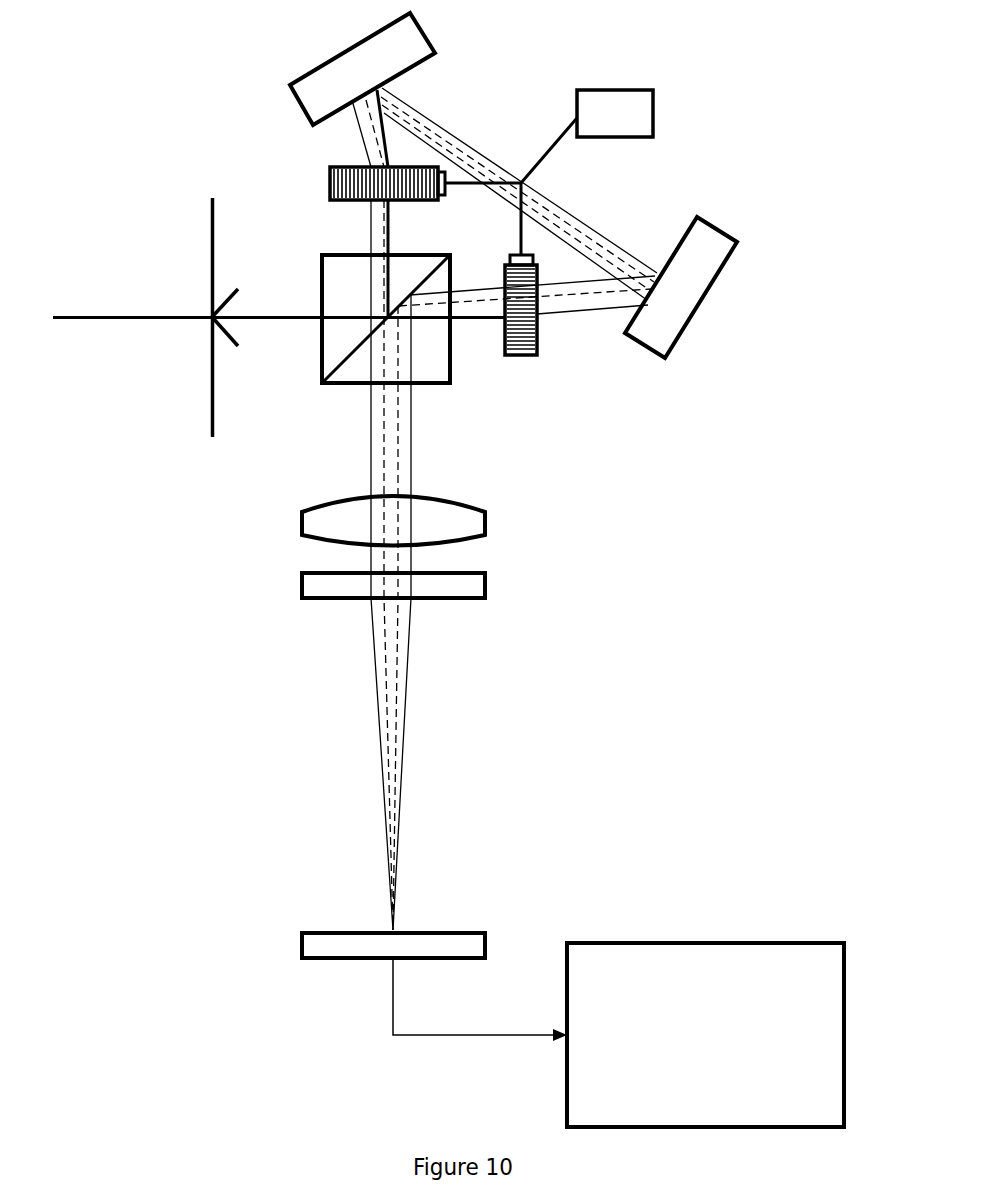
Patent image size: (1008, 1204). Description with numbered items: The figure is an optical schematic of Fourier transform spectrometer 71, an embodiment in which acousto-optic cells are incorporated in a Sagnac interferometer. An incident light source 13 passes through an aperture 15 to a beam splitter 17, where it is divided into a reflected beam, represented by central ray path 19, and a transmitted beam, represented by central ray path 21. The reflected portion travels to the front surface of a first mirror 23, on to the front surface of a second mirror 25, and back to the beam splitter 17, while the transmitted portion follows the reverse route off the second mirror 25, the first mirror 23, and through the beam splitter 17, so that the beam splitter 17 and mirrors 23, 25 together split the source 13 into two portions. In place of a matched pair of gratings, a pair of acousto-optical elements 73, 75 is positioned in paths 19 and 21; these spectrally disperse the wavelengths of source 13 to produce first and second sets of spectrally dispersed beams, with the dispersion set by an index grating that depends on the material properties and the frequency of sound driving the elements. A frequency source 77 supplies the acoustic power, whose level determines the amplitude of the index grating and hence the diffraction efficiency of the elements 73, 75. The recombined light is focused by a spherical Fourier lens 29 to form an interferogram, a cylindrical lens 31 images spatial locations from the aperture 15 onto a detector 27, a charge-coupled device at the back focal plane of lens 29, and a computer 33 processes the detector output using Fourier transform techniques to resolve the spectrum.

The incident light source 13 is at (168, 316).
The aperture 15 is at (213, 227).
The beam splitter 17 is at (322, 379).
The central ray path of reflected beam 19 is at (393, 242).
The central ray path of transmitted beam 21 is at (470, 319).
The first mirror 23 is at (313, 70).
The second mirror 25 is at (700, 302).
The detector 27 is at (302, 946).
The spherical lens 29 is at (302, 520).
The cylindrical lens 31 is at (302, 585).
The computer 33 is at (705, 942).
The Fourier transform spectrometer 71 is at (690, 489).
The acousto-optical element 73 is at (537, 352).
The acousto-optical element 75 is at (330, 183).
The frequency source 77 is at (640, 90).